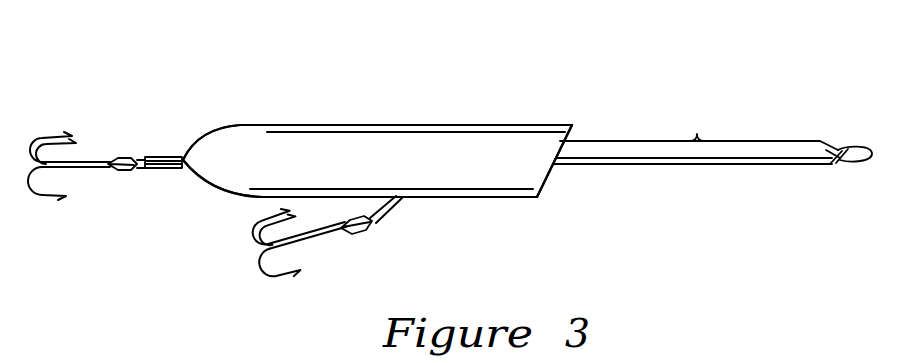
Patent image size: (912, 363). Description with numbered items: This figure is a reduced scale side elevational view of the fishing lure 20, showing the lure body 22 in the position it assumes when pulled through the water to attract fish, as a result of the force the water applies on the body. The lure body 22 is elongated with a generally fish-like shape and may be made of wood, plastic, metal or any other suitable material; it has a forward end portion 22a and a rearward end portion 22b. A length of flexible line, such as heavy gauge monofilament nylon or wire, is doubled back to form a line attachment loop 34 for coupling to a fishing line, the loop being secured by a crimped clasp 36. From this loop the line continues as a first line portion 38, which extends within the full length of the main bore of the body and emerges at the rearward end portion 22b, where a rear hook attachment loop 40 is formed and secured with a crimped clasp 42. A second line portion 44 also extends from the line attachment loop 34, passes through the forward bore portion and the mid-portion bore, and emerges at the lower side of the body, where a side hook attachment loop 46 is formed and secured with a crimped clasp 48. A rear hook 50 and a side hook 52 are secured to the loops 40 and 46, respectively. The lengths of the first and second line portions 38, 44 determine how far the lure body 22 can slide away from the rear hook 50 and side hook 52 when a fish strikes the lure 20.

The fishing lure 20 is at (330, 100).
The lure body 22 is at (422, 124).
The forward end portion 22a is at (548, 193).
The rearward end portion 22b is at (207, 183).
The line attachment loop 34 is at (858, 166).
The crimped clasp 36 is at (838, 165).
The first line portion 38 is at (180, 152).
The rear hook attachment loop 40 is at (135, 152).
The crimped clasp 42 is at (157, 152).
The second line portion 44 is at (400, 206).
The side hook attachment loop 46 is at (356, 233).
The crimped clasp 48 is at (385, 228).
The rear hook 50 is at (58, 200).
The side hook 52 is at (280, 277).